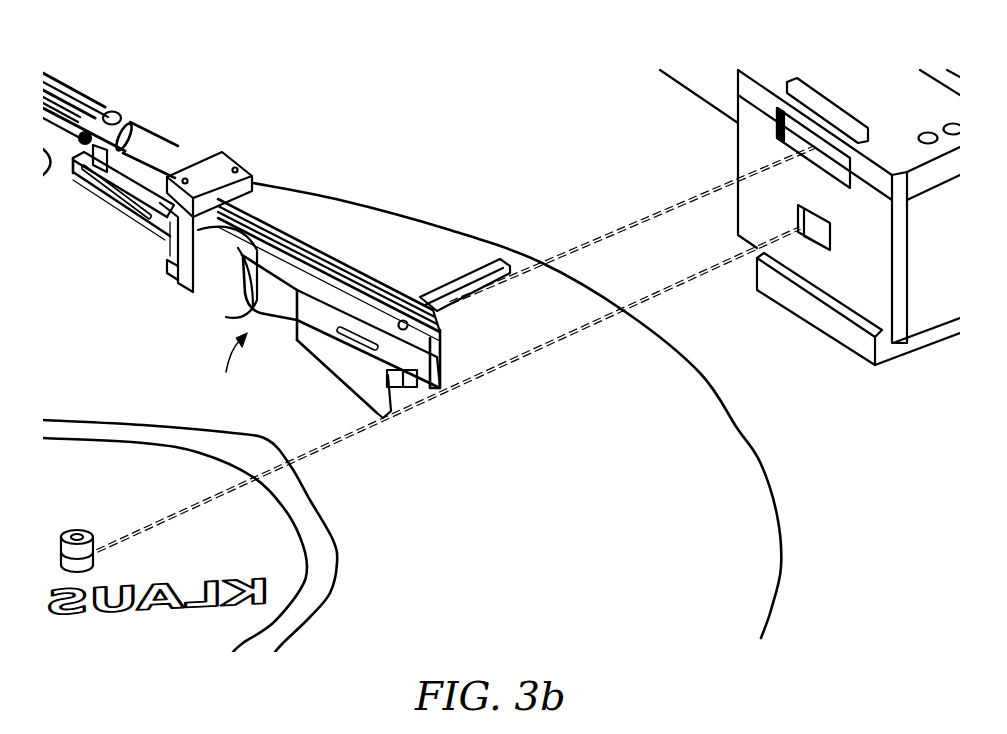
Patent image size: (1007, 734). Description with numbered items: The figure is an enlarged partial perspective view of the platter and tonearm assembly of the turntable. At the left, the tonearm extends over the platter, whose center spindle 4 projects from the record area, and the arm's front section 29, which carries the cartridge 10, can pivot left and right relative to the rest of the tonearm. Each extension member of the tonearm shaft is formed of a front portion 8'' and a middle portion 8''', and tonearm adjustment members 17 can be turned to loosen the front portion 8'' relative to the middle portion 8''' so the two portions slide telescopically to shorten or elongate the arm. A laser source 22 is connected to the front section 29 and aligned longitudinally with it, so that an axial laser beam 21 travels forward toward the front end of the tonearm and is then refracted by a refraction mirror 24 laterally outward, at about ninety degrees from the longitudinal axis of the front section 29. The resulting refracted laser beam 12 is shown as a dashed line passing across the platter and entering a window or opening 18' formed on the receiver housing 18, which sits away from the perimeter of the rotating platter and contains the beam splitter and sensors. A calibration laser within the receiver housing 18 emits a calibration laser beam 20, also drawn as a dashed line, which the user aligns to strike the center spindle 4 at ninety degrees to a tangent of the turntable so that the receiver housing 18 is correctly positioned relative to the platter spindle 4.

The center spindle 4 is at (90, 530).
The front portion of extension member 8'' is at (123, 230).
The middle portion of extension member 8''' is at (98, 95).
The cartridge 10 is at (327, 360).
The refracted laser beam 12 is at (607, 230).
The tonearm adjustment members 17 is at (118, 112).
The receiver housing 18 is at (811, 265).
The window or opening 18' is at (747, 148).
The calibration laser beam 20 is at (547, 350).
The axial laser beam 21 is at (308, 268).
The laser source 22 is at (180, 147).
The refraction mirror 24 is at (397, 322).
The front section of tonearm 29 is at (223, 368).